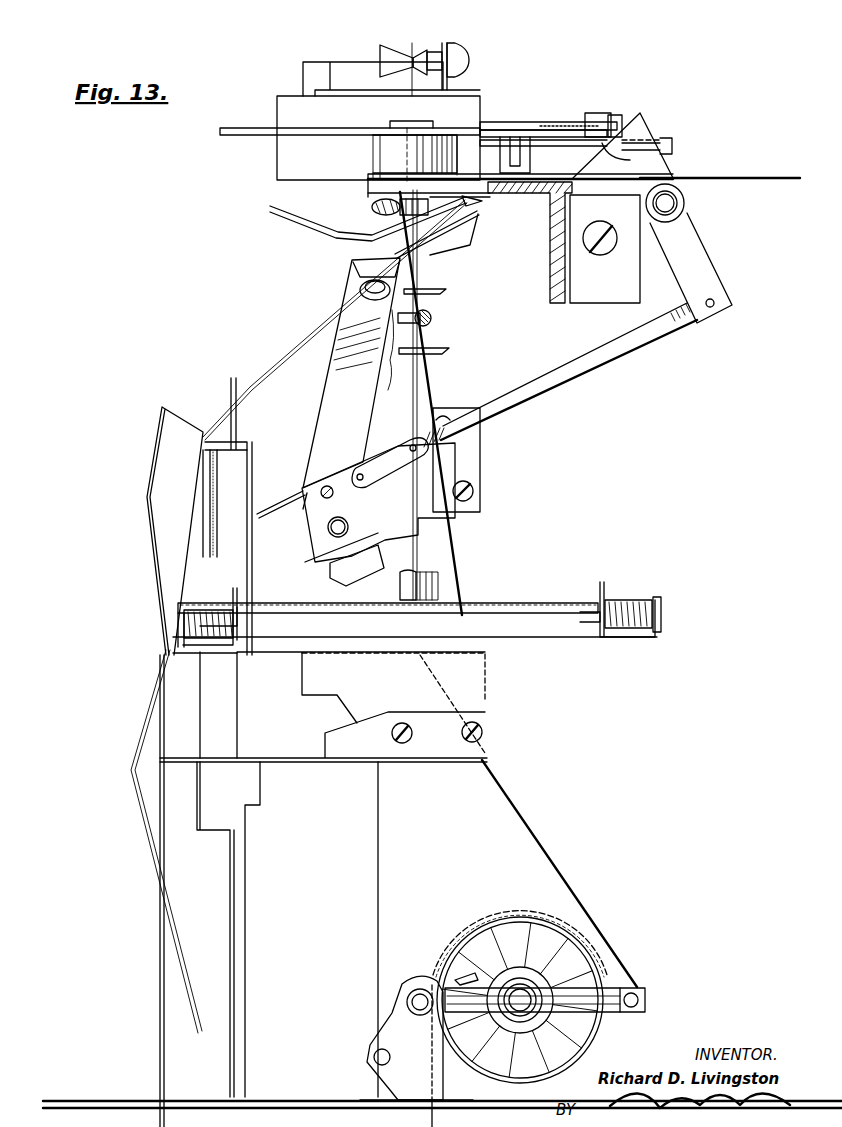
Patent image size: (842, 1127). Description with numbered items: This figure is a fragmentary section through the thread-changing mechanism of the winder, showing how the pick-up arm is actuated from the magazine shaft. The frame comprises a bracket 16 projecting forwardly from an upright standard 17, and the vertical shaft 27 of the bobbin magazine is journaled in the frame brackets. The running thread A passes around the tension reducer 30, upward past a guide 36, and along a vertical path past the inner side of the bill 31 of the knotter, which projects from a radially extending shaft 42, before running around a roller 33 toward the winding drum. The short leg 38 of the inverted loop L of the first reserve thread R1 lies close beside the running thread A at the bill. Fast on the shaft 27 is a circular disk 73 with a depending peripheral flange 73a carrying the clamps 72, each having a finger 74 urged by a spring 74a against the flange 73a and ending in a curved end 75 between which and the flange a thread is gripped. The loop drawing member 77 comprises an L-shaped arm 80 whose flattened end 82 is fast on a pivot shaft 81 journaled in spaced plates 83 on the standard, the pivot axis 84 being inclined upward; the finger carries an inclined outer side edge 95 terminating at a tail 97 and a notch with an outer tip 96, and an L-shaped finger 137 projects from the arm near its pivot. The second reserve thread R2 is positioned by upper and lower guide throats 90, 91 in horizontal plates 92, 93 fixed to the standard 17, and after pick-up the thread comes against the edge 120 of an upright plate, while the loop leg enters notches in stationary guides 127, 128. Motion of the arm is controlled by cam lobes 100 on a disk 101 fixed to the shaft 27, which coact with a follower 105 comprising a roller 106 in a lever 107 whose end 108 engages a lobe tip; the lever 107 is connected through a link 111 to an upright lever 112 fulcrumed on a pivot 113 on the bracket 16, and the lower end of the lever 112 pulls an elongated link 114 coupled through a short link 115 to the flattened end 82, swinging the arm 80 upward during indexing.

The bracket 16 is at (515, 196).
The upright standard 17 is at (760, 191).
The vertical shaft 27 is at (374, 207).
The tension reducer 30 is at (502, 903).
The knotter bill 31 is at (353, 373).
The roller 33 is at (400, 55).
The guide 36 is at (420, 656).
The short leg 38 is at (425, 405).
The radially extending shaft 42 is at (430, 324).
The clamp 72 is at (178, 624).
The circular disk 73 is at (582, 598).
The depending peripheral flange 73a is at (640, 632).
The finger 74 is at (657, 628).
The spring 74a is at (630, 598).
The finger end 75 is at (661, 606).
The loop drawing member 77 is at (455, 257).
The arm 80 is at (342, 385).
The pivot shaft 81 is at (328, 528).
The flattened end 82 is at (362, 502).
The spaced plates 83 is at (340, 566).
The pivot axis 84 is at (340, 535).
The upper guide throat 90 is at (206, 886).
The lower guide throat 91 is at (168, 758).
The upper horizontal plate 92 is at (250, 656).
The lower horizontal plate 93 is at (268, 758).
The outer side edge 95 is at (362, 234).
The outer tip 96 is at (474, 212).
The tail 97 is at (310, 226).
The cam lobes 100 is at (565, 124).
The cam disk 101 is at (262, 137).
The follower 105 is at (553, 118).
The roller 106 is at (597, 112).
The lever 107 is at (558, 147).
The lever end 108 is at (620, 114).
The link 111 is at (660, 150).
The upright lever 112 is at (692, 250).
The pivot 113 is at (665, 203).
The elongated link 114 is at (598, 368).
The short link 115 is at (382, 446).
The edge 120 is at (152, 566).
The stationary guide 127 is at (432, 292).
The stationary guide 128 is at (433, 355).
The L-shaped finger 137 is at (292, 498).
The running thread A is at (422, 534).
The inverted loop L is at (322, 332).
The first reserve thread R1 is at (456, 564).
The second reserve thread R2 is at (165, 820).